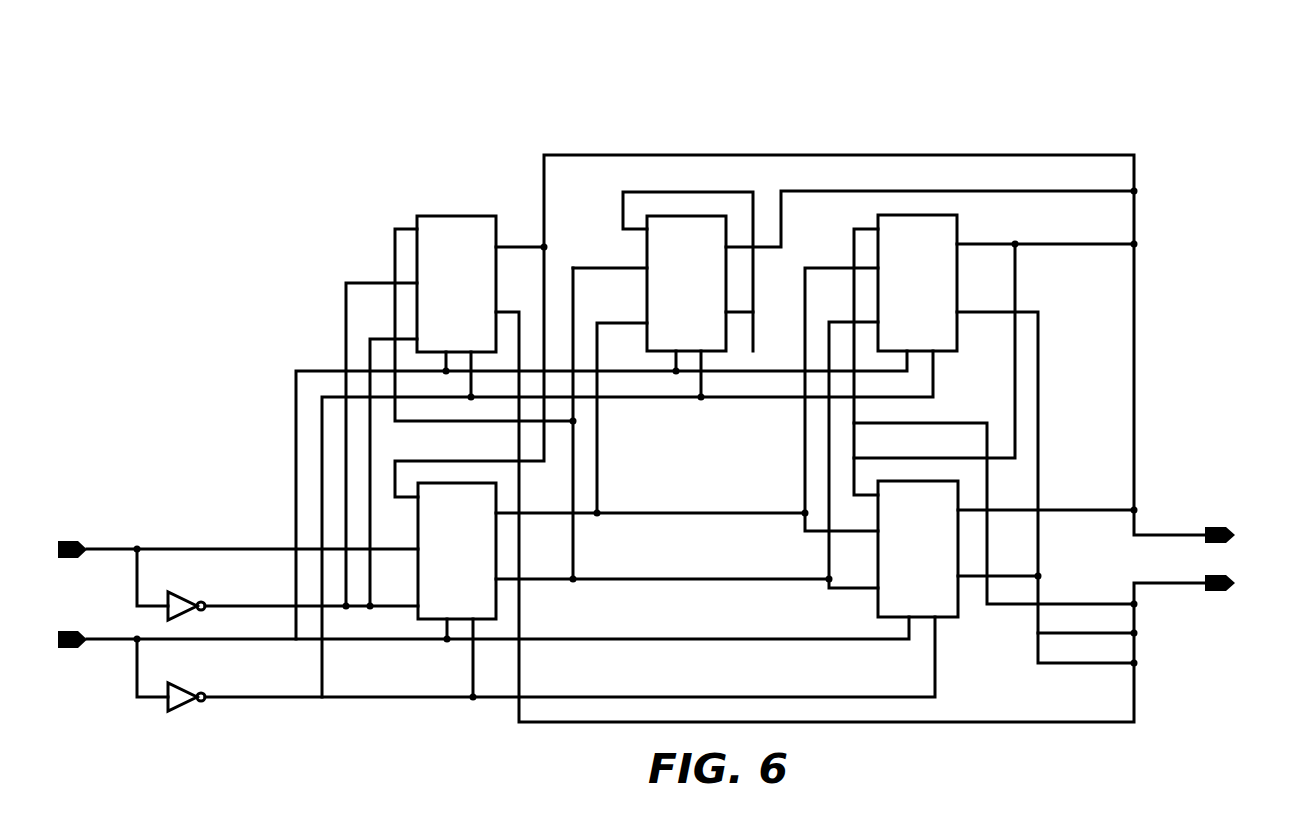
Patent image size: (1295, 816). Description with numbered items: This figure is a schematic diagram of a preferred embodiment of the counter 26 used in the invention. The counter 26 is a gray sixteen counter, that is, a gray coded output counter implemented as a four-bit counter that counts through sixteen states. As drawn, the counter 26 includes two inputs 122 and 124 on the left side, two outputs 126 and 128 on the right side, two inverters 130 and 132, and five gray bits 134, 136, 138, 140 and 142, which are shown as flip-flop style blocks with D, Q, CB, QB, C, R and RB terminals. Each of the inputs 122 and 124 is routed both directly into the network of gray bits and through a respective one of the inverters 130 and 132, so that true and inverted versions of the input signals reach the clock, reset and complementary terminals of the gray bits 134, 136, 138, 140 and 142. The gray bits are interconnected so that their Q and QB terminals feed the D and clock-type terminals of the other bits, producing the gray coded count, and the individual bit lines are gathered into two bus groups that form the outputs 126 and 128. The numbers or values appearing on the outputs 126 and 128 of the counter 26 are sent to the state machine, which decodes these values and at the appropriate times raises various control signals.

The counter 26 is at (350, 105).
The input 122 is at (70, 541).
The input 124 is at (70, 648).
The output 126 is at (1233, 533).
The output 128 is at (1233, 580).
The inverter 130 is at (180, 599).
The inverter 132 is at (180, 690).
The gray bit 134 is at (440, 215).
The gray bit 136 is at (668, 215).
The gray bit 138 is at (897, 214).
The gray bit 140 is at (437, 482).
The gray bit 142 is at (900, 480).